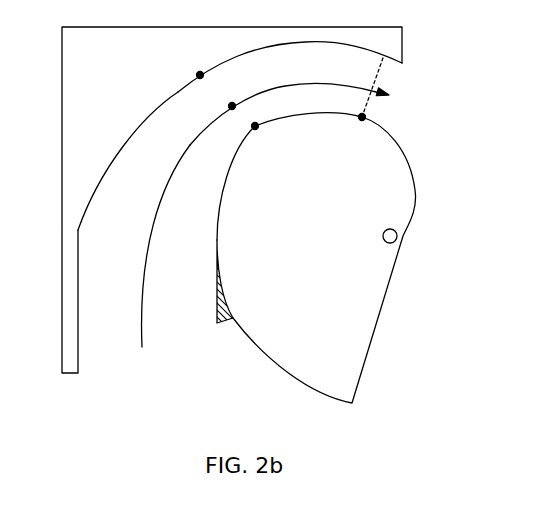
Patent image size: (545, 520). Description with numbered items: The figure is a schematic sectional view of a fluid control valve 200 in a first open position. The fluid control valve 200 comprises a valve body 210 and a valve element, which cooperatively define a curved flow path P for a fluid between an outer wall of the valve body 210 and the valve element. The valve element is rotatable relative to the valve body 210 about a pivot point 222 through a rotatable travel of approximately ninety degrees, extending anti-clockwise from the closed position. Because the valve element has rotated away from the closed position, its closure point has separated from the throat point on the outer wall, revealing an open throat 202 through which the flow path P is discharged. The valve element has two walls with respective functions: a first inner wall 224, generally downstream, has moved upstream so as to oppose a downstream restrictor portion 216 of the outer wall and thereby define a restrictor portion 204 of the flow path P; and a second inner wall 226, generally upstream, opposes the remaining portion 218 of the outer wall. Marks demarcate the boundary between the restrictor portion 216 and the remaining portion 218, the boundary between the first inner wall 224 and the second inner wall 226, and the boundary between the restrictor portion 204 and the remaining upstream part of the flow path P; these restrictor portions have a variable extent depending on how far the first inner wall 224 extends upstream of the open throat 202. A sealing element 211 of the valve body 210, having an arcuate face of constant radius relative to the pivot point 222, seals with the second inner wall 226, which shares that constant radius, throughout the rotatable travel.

The fluid control valve 200 is at (76, 24).
The valve body 210 is at (119, 66).
The restrictor portion of the outer wall 216 is at (243, 53).
The remaining portion of the outer wall 218 is at (145, 116).
The restrictor portion of the flow path 204 is at (262, 92).
The flow path P is at (150, 236).
The open throat 202 is at (381, 74).
The first inner wall 224 is at (322, 113).
The second inner wall 226 is at (238, 152).
The sealing element 211 is at (215, 296).
The pivot point 222 is at (397, 241).